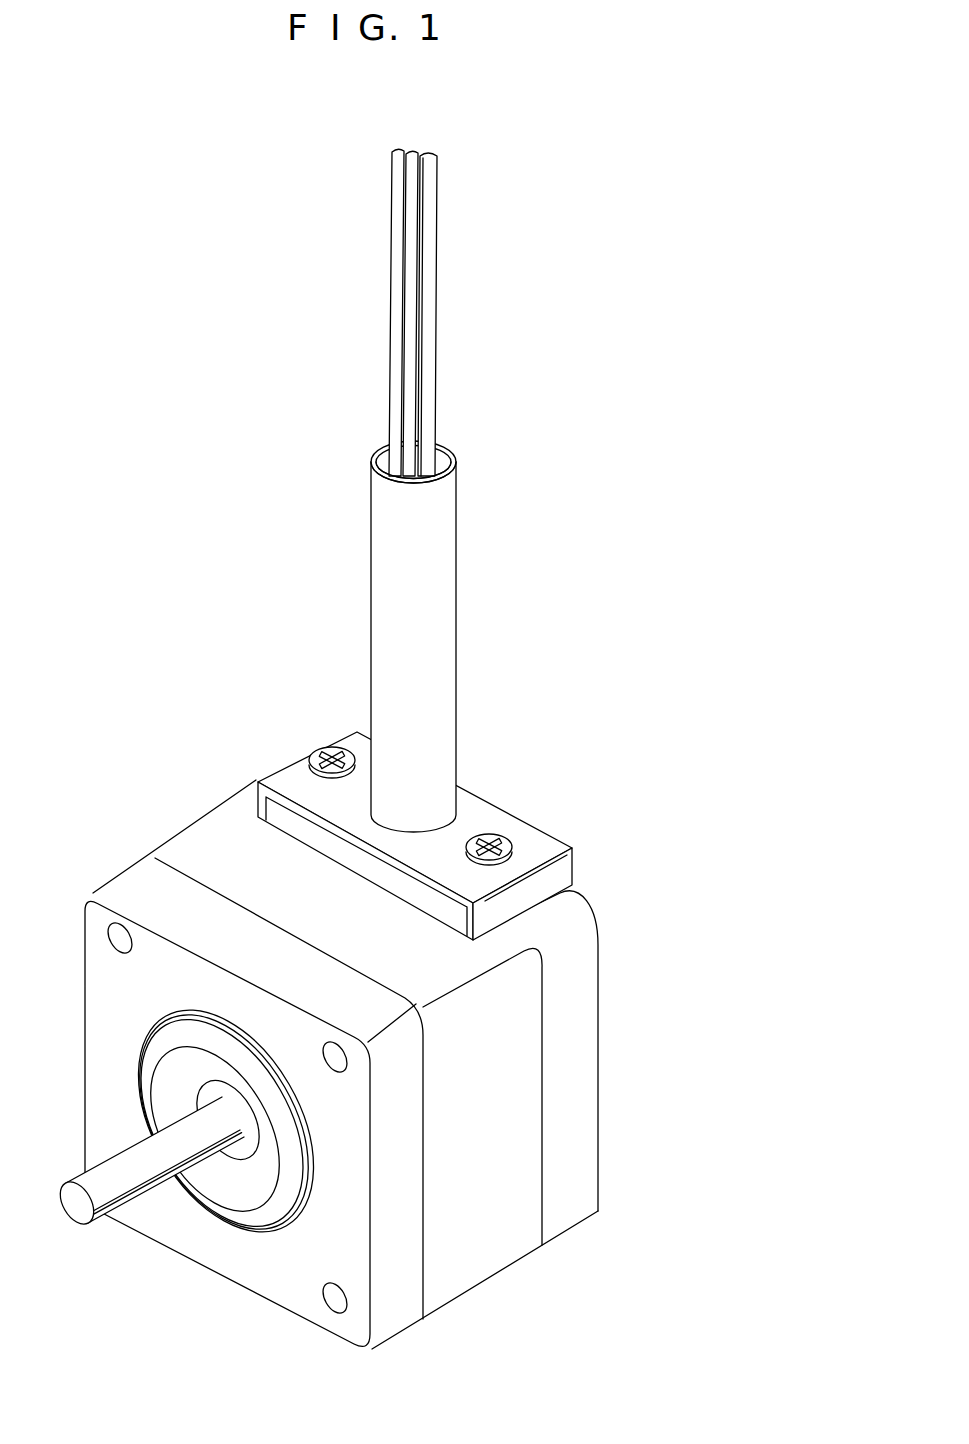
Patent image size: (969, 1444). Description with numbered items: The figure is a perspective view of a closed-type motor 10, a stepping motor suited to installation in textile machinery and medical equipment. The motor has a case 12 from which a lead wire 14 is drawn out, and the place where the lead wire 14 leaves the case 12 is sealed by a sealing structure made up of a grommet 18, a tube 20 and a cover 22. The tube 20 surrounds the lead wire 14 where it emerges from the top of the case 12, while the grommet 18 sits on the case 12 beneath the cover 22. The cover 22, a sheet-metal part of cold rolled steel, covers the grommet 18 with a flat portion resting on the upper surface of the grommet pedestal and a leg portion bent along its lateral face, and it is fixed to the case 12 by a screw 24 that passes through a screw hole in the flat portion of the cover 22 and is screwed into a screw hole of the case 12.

The closed-type motor 10 is at (403, 749).
The case 12 is at (598, 1052).
The lead wire 14 is at (451, 258).
The grommet 18 is at (337, 850).
The tube 20 is at (457, 563).
The cover 22 is at (487, 797).
The screw 24 is at (320, 750).